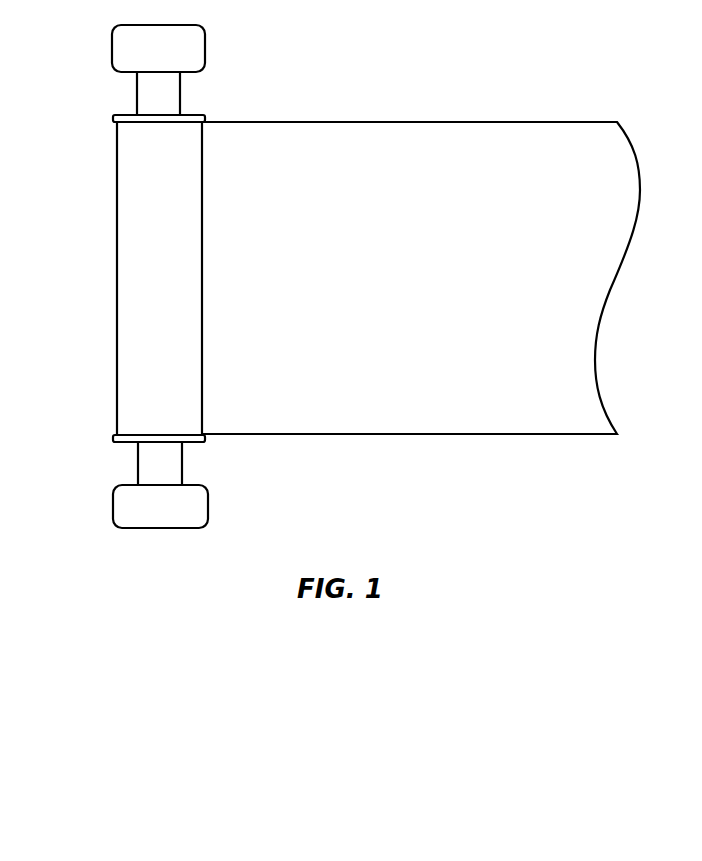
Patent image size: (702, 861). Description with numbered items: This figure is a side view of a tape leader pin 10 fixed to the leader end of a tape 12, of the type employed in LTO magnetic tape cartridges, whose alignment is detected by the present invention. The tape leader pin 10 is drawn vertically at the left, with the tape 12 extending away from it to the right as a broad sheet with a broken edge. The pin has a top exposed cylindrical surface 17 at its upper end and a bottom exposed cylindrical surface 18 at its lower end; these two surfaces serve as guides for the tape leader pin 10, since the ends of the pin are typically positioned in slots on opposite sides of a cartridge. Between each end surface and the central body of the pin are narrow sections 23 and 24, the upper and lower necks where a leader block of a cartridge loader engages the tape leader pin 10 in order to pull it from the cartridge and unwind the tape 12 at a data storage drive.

The tape leader pin 10 is at (116, 198).
The tape 12 is at (404, 290).
The top exposed cylindrical surface 17 is at (112, 37).
The bottom exposed cylindrical surface 18 is at (114, 515).
The narrow section 23 is at (137, 99).
The narrow section 24 is at (138, 467).